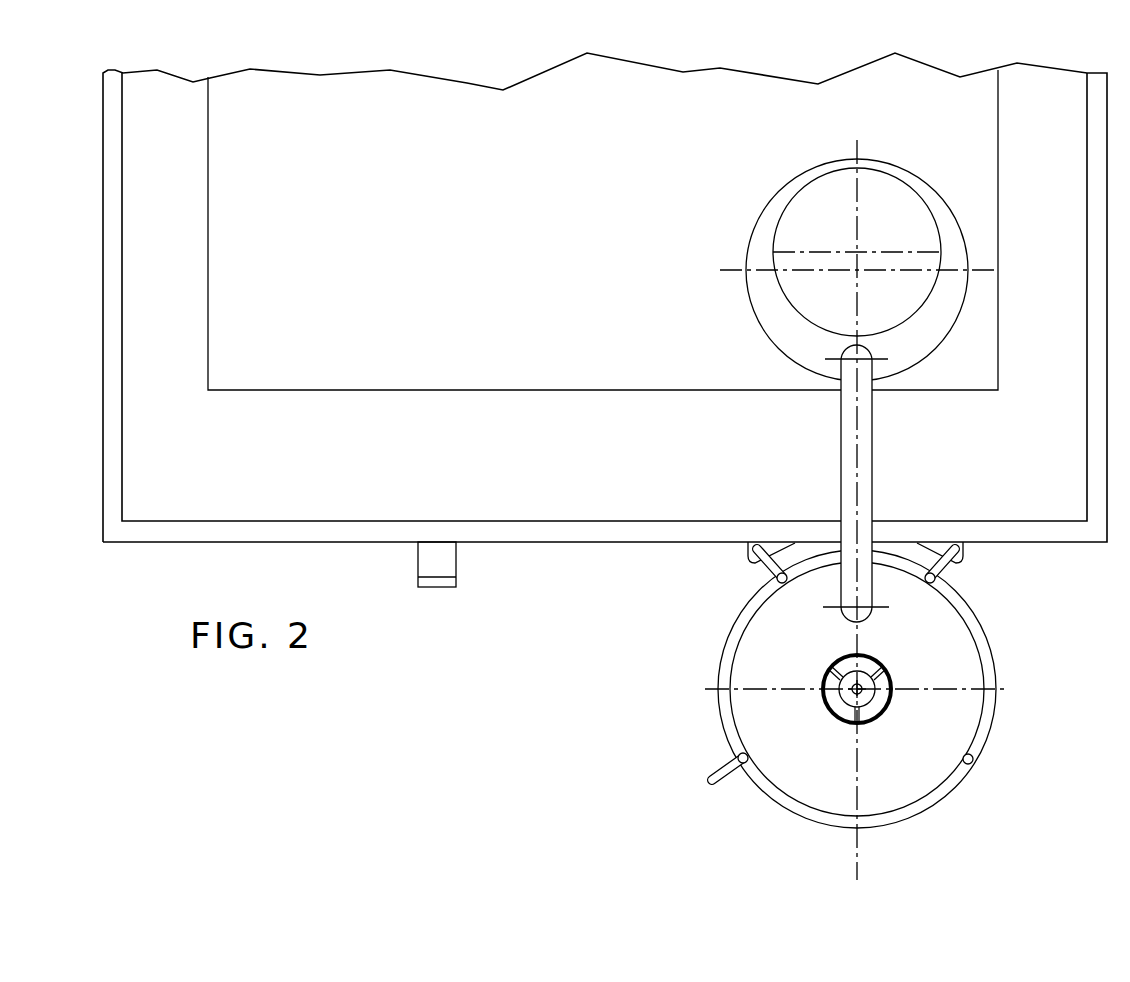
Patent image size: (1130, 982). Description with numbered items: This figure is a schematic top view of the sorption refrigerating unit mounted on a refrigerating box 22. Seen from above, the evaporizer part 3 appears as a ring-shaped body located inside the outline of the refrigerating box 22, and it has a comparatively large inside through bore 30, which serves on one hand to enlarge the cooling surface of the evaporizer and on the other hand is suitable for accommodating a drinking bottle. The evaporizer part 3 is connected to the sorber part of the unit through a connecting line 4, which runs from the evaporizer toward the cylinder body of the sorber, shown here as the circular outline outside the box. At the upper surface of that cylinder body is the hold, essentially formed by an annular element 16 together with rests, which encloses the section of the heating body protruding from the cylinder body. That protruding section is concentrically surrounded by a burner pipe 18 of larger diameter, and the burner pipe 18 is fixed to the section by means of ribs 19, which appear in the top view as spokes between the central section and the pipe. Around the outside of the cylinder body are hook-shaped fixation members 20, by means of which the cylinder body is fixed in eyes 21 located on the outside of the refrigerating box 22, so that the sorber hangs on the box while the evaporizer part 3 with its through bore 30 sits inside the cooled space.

The refrigerating box 22 is at (376, 182).
The inside through bore 30 is at (868, 188).
The evaporizer part 3 is at (957, 255).
The connecting line 4 is at (866, 452).
The annular element 16 is at (985, 644).
The burner pipe 18 is at (872, 716).
The ribs 19 is at (840, 722).
The hook-shaped fixation members 20 is at (767, 575).
The eyes 21 is at (777, 546).